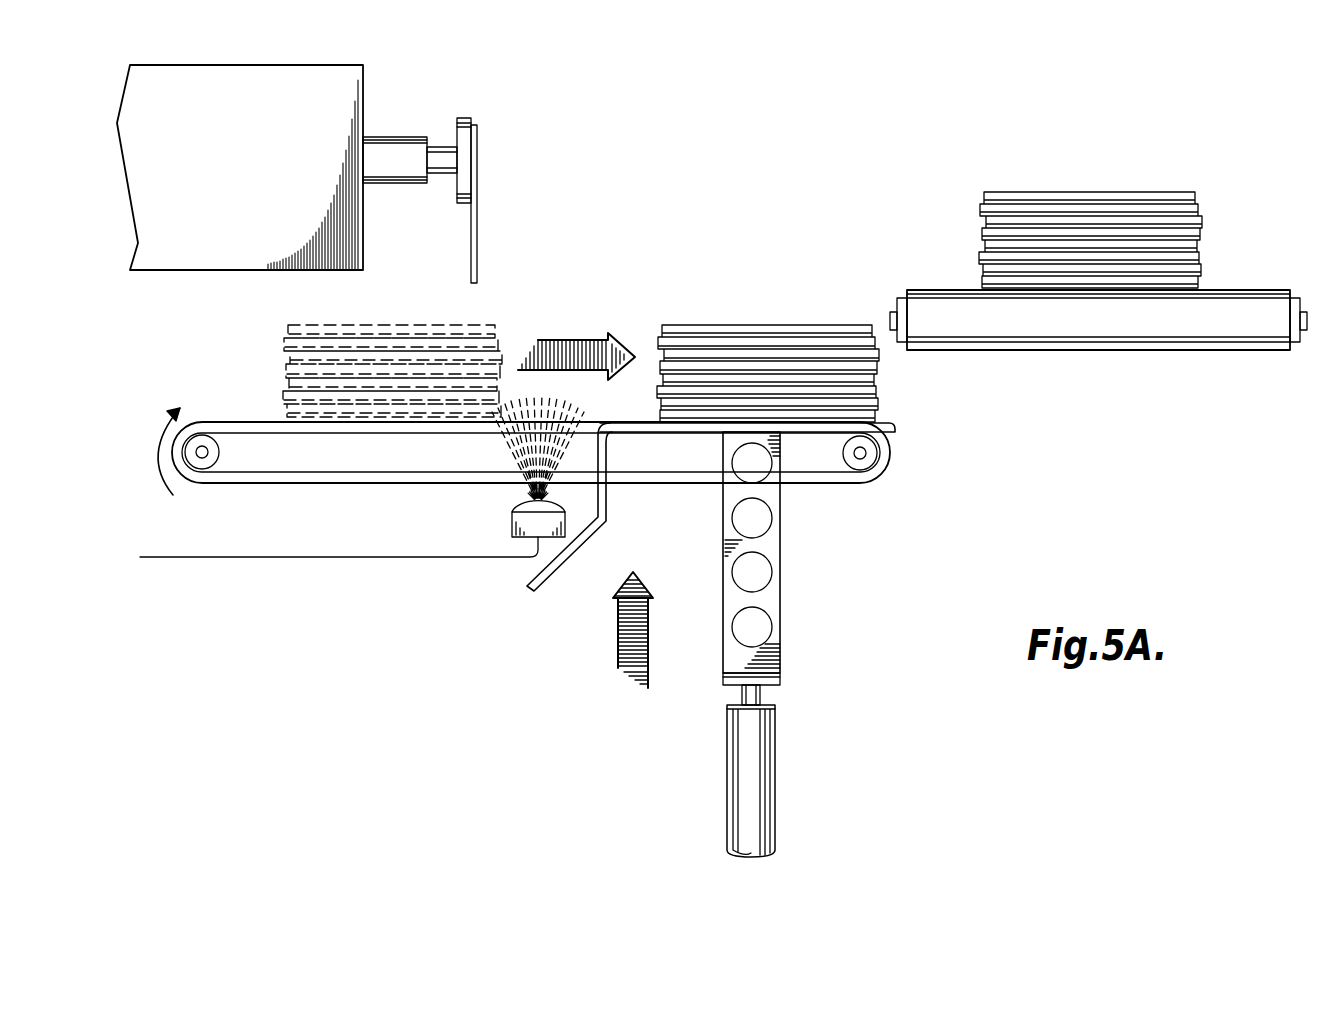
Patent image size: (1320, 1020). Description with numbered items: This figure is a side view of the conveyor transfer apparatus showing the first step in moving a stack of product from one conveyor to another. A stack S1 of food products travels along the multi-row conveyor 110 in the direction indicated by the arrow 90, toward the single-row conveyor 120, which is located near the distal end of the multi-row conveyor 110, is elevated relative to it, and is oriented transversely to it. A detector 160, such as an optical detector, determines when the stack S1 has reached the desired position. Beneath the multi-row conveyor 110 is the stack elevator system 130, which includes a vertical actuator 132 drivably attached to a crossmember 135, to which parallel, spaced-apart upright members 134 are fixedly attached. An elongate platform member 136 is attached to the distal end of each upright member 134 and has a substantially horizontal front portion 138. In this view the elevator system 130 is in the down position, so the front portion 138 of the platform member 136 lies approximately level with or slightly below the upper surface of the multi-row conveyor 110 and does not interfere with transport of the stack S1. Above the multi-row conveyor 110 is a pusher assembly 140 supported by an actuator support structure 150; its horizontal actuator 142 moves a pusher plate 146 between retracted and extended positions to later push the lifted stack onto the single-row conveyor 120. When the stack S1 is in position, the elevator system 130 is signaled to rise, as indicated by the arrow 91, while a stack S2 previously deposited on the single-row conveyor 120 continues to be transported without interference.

The arrow 90 is at (578, 345).
The arrow 91 is at (618, 638).
The multi-row conveyor 110 is at (247, 420).
The single-row conveyor 120 is at (1200, 356).
The stack elevator system 130 is at (810, 802).
The vertical actuator 132 is at (762, 752).
The upright member 134 is at (782, 615).
The crossmember 135 is at (782, 683).
The platform member 136 is at (606, 506).
The front portion 138 is at (895, 418).
The pusher assembly 140 is at (415, 112).
The horizontal actuator 142 is at (392, 172).
The pusher plate 146 is at (480, 174).
The actuator support structure 150 is at (257, 167).
The detector 160 is at (505, 522).
The stack S1 is at (332, 325).
The stack S2 is at (1112, 192).